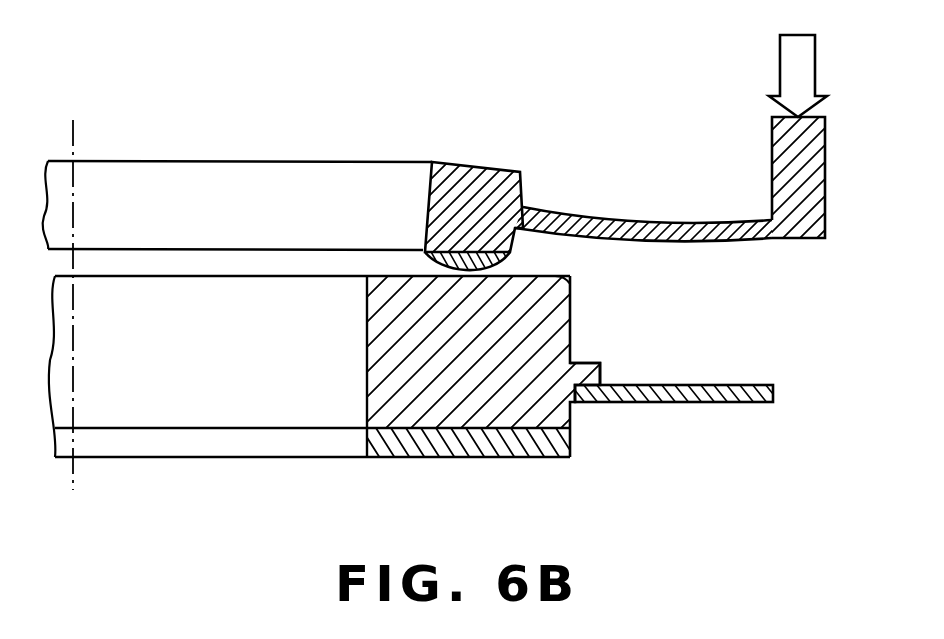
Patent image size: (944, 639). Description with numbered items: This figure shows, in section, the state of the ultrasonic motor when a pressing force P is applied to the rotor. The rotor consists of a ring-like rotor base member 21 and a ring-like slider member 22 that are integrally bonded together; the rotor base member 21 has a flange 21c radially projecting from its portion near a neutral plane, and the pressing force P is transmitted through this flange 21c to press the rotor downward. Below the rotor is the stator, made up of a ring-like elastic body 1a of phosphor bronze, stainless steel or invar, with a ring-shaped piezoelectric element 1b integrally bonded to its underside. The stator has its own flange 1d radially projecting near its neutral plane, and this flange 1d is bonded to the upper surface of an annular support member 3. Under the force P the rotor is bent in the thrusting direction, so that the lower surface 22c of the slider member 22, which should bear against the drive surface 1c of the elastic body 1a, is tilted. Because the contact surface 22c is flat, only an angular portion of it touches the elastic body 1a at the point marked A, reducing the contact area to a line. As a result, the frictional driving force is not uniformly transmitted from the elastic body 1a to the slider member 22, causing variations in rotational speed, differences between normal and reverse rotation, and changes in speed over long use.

The rotor base member 21 is at (493, 170).
The slider member 22 is at (497, 271).
The lower surface of the slider member 22c is at (466, 276).
The flange 21c is at (716, 242).
The pressing force P is at (798, 58).
The elastic body 1a is at (465, 413).
The piezoelectric element 1b is at (528, 443).
The drive surface 1c is at (573, 276).
The flange 1d is at (600, 374).
The contact point A is at (488, 278).
The annular support member 3 is at (717, 403).